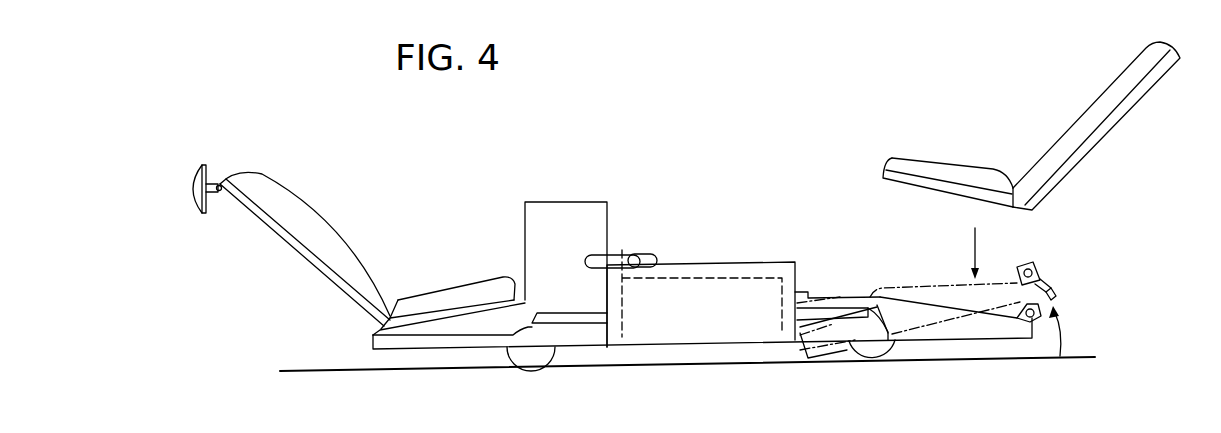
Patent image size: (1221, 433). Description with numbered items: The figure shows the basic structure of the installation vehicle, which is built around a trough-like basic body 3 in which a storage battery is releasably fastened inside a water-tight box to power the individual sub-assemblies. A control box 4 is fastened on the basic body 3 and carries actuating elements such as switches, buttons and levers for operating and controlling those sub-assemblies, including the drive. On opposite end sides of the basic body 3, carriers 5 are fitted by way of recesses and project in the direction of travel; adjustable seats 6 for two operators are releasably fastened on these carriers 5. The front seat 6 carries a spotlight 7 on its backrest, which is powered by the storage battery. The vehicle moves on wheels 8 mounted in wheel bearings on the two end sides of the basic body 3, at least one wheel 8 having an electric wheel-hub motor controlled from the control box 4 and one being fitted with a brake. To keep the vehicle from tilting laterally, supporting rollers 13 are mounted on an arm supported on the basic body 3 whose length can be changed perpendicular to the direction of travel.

The trough-like basic body 3 is at (742, 275).
The control box 4 is at (575, 228).
The carriers 5 is at (441, 332).
The adjustable seats 6 is at (333, 268).
The spotlight 7 is at (195, 200).
The wheels 8 is at (532, 362).
The supporting rollers 13 is at (648, 260).